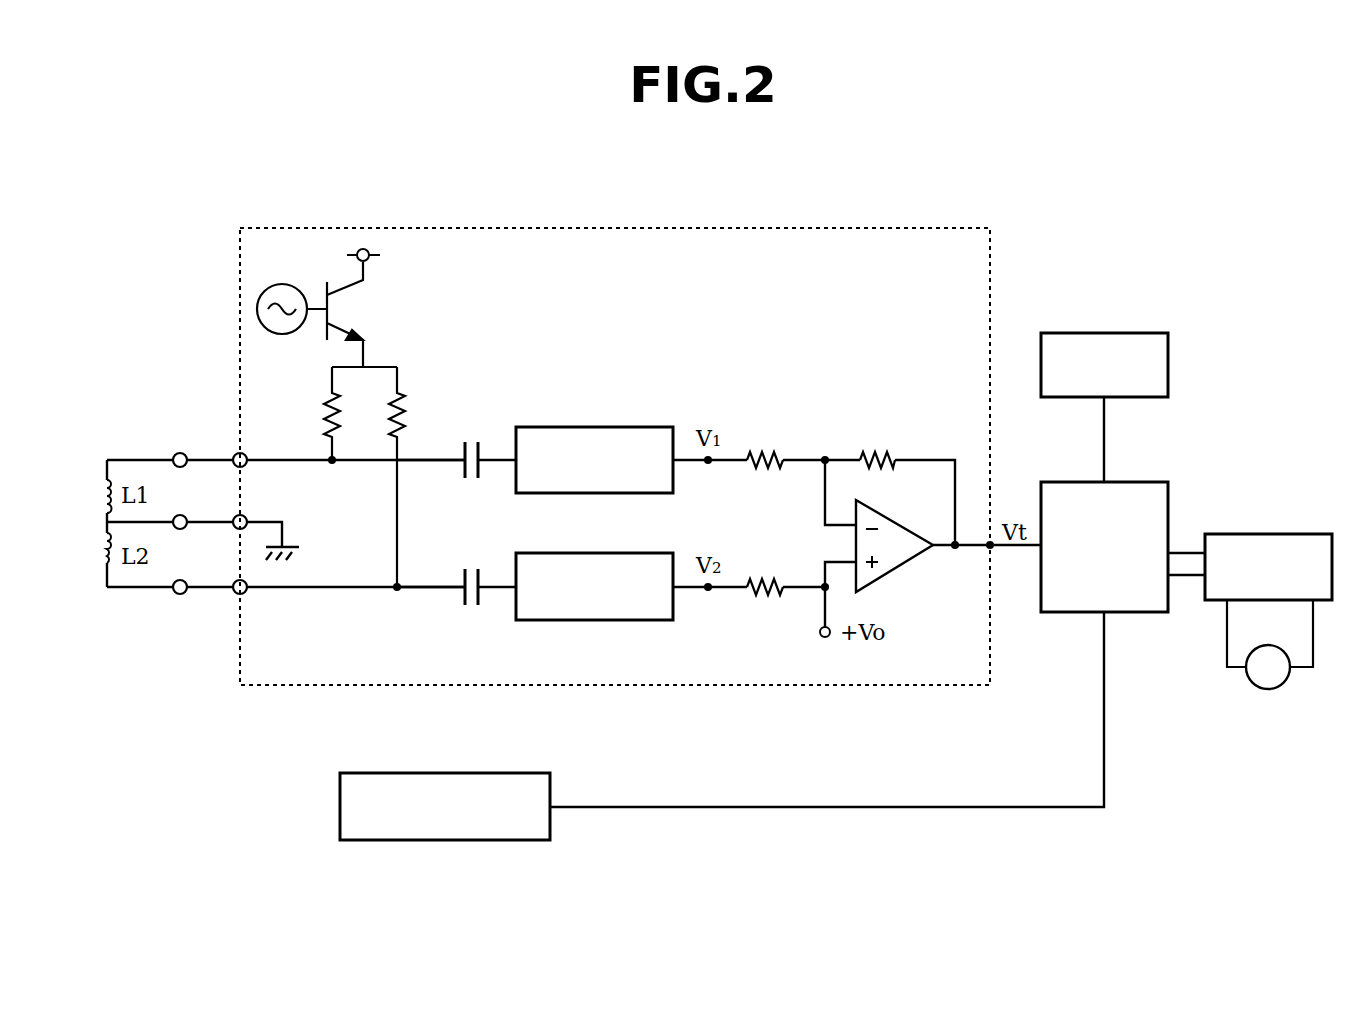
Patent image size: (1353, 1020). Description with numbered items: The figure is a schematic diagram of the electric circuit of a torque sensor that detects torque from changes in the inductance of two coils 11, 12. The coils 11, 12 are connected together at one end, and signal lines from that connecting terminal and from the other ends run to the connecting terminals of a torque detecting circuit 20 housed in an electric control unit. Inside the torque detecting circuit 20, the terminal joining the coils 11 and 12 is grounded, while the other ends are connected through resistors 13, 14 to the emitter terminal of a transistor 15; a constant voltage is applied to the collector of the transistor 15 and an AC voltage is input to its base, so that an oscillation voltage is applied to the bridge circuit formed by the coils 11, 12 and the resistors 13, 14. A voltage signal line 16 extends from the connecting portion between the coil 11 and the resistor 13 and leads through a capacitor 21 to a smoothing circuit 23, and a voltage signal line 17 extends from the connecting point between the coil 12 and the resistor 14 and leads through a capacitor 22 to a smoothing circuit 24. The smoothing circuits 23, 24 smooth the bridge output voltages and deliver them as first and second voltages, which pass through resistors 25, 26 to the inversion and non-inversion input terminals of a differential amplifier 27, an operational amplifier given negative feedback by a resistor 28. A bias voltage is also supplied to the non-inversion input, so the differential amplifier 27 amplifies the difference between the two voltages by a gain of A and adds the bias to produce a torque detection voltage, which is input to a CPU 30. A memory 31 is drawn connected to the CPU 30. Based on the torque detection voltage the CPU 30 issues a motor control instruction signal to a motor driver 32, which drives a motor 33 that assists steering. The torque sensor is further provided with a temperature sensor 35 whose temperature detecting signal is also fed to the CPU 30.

The coil 11 is at (107, 478).
The coil 12 is at (107, 565).
The resistor 13 is at (324, 412).
The resistor 14 is at (406, 405).
The transistor 15 is at (364, 309).
The voltage signal line 16 is at (432, 464).
The voltage signal line 17 is at (432, 591).
The torque detecting circuit 20 is at (990, 280).
The capacitor 21 is at (460, 472).
The capacitor 22 is at (460, 598).
The smoothing circuit 23 is at (628, 427).
The smoothing circuit 24 is at (628, 553).
The resistor 25 is at (768, 453).
The resistor 26 is at (768, 580).
The differential amplifier 27 is at (893, 568).
The resistor 28 is at (879, 453).
The CPU 30 is at (1150, 482).
The memory 31 is at (1120, 333).
The motor driver 32 is at (1275, 534).
The motor 33 is at (1269, 690).
The temperature sensor 35 is at (505, 773).